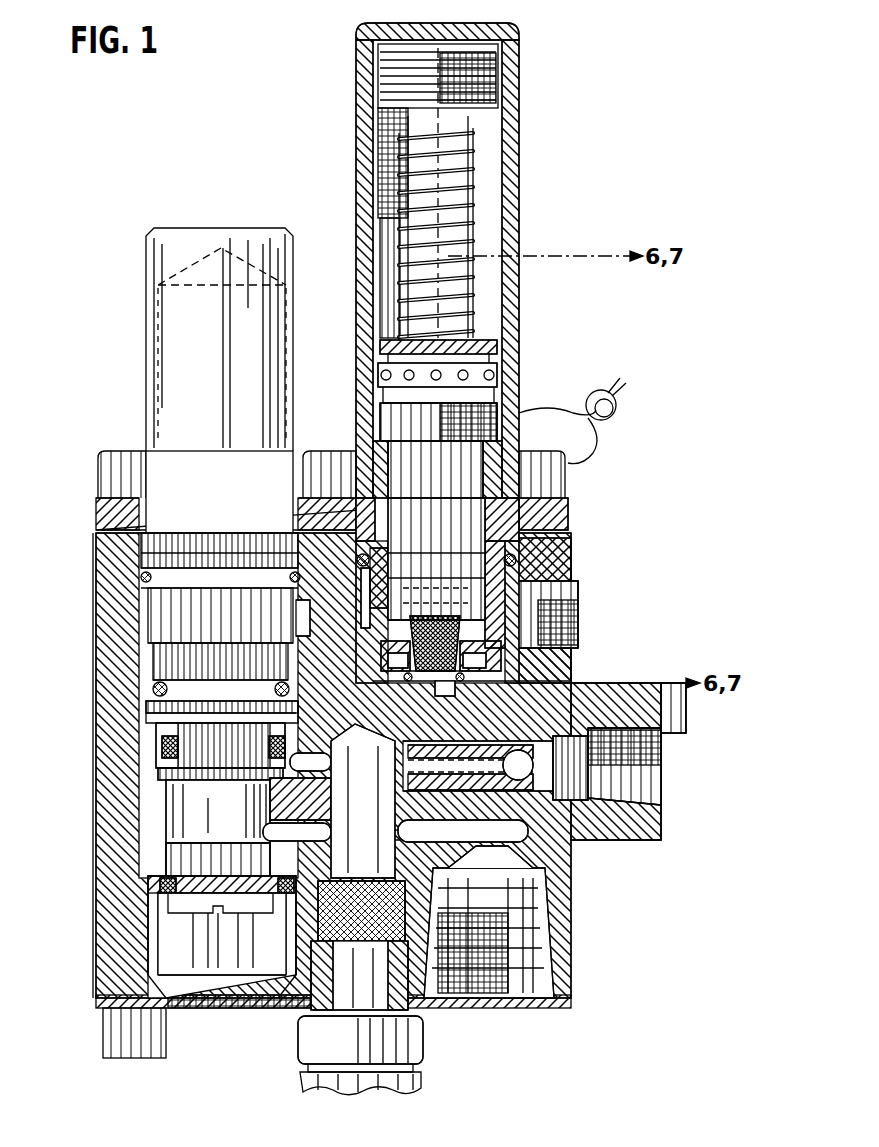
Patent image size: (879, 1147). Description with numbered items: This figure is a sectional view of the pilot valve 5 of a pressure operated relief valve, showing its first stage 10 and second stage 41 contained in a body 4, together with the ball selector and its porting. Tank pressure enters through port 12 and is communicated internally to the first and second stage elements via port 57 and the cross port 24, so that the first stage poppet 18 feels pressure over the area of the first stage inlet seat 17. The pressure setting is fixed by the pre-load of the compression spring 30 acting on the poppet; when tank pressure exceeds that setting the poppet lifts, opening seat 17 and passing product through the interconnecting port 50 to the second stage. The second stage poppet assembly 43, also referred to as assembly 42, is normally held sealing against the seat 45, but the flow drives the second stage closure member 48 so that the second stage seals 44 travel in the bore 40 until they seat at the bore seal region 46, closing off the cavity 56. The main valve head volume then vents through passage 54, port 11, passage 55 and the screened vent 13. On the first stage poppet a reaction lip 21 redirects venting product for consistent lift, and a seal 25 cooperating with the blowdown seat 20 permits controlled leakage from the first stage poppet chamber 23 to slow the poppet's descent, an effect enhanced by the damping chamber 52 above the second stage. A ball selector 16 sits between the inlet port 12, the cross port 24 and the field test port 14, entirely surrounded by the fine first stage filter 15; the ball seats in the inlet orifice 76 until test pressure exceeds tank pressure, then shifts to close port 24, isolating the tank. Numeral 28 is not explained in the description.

The body 4 is at (88, 875).
The pilot valve 5 is at (563, 985).
The first stage 10 is at (528, 40).
The port 11 is at (490, 992).
The port 12 is at (405, 1000).
The screened vent 13 is at (200, 1000).
The field test port 14 is at (640, 760).
The first stage filter 15 is at (472, 785).
The ball selector 16 is at (518, 765).
The first stage inlet seat 17 is at (440, 672).
The first stage poppet 18 is at (443, 347).
The first stage poppet blowdown seat 20 is at (455, 610).
The reaction lip 21 is at (540, 690).
The first stage poppet chamber 23 is at (548, 668).
The cross port 24 is at (395, 757).
The seal 25 is at (350, 660).
The bottom plate 28 is at (255, 1000).
The compression spring 30 is at (478, 128).
The bore 40 is at (165, 822).
The second stage 41 is at (84, 441).
The second stage poppet assembly 42 is at (268, 936).
The second stage poppet assembly 43 is at (134, 728).
The second stage seals 44 is at (155, 746).
The seat 45 is at (150, 878).
The bore seal region 46 is at (165, 785).
The second stage closure member 48 is at (145, 703).
The interconnecting port 50 is at (288, 606).
The damping chamber 52 is at (175, 323).
The passage 54 is at (300, 826).
The passage 55 is at (262, 792).
The cavity 56 is at (284, 735).
The port 57 is at (323, 750).
The inlet orifice 76 is at (570, 768).